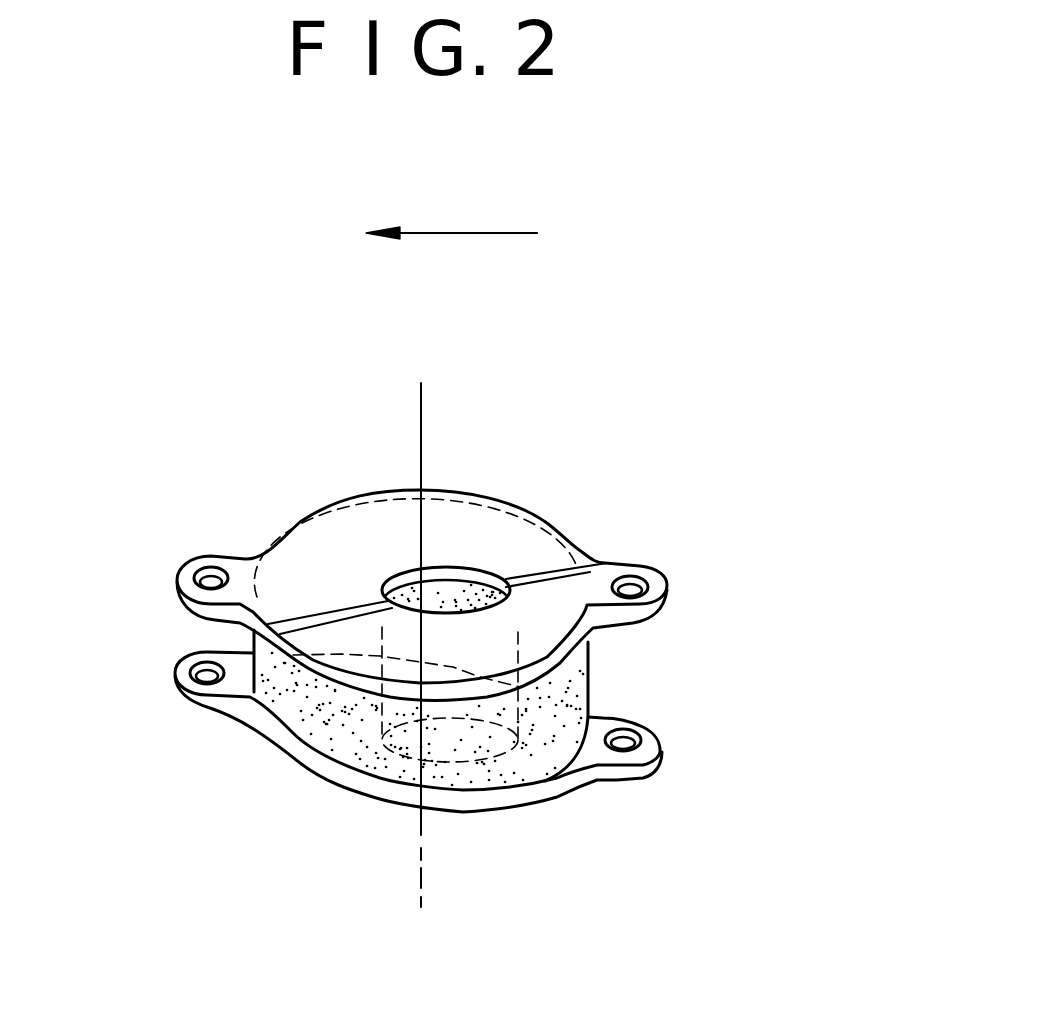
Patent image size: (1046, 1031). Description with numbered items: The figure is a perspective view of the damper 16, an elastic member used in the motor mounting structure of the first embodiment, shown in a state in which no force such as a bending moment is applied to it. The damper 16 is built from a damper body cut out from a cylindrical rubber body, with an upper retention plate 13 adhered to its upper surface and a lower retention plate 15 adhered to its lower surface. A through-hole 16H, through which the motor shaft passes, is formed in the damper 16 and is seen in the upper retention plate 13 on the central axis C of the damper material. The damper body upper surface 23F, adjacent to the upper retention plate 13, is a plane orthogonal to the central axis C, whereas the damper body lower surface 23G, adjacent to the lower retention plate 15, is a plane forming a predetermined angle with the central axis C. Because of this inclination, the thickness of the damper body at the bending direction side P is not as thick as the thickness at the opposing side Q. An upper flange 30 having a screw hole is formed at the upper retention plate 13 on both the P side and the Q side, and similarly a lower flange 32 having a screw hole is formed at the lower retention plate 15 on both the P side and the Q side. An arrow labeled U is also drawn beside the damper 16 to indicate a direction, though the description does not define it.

The damper 16 is at (747, 362).
The upper retention plate 13 is at (318, 568).
The lower retention plate 15 is at (310, 767).
The upper flange 30 is at (188, 571).
The lower flange 32 is at (183, 693).
The through-hole 16H is at (442, 583).
The damper body upper surface 23F is at (543, 552).
The damper body lower surface 23G is at (533, 782).
The central axis C is at (418, 410).
The bending direction side P is at (250, 638).
The opposing side Q is at (587, 682).
The upward direction U is at (429, 240).